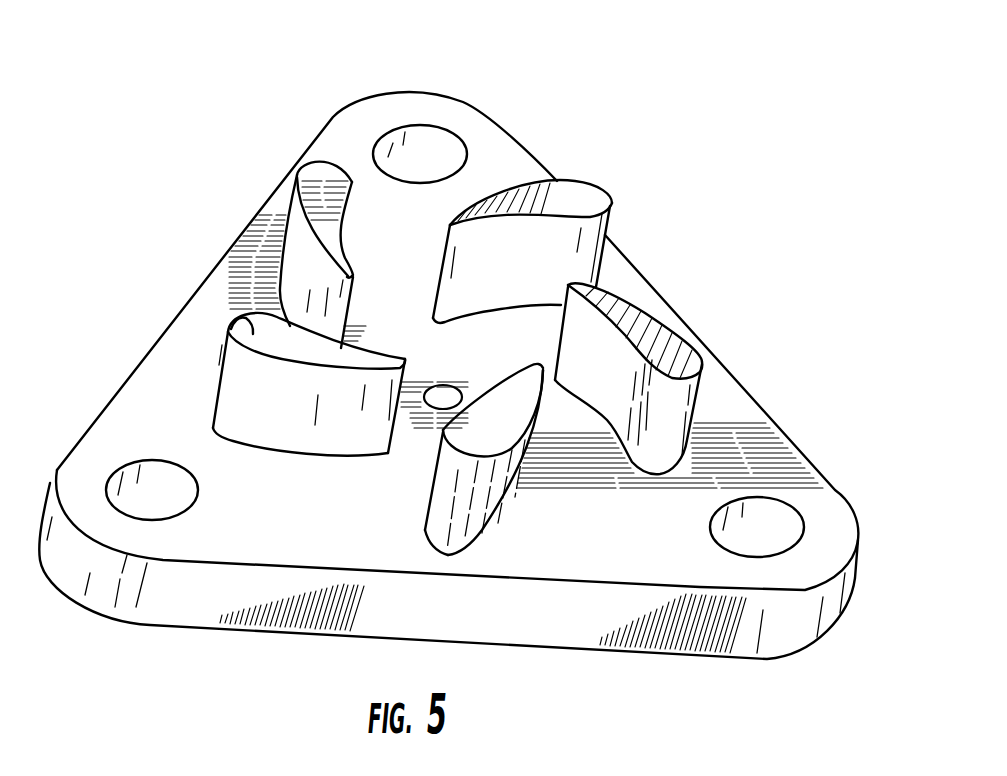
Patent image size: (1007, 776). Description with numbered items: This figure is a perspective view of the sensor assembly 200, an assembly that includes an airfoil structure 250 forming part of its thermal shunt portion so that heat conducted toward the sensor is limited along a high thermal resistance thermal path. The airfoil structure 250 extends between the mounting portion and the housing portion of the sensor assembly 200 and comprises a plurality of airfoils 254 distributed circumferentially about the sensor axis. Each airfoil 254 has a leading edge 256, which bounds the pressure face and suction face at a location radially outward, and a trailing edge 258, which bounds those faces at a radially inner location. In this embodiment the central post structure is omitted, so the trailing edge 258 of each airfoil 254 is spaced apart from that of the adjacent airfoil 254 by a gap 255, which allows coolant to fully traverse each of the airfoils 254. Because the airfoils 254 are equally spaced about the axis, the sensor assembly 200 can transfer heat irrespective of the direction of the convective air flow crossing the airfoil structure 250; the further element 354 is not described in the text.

The sensor assembly 200 is at (448, 382).
The airfoil structure 250 is at (678, 134).
The airfoil 254 is at (443, 438).
The gap 255 is at (432, 456).
The leading edge 256 is at (432, 468).
The trailing edge 258 is at (527, 363).
The curved guide wall 354 is at (235, 317).